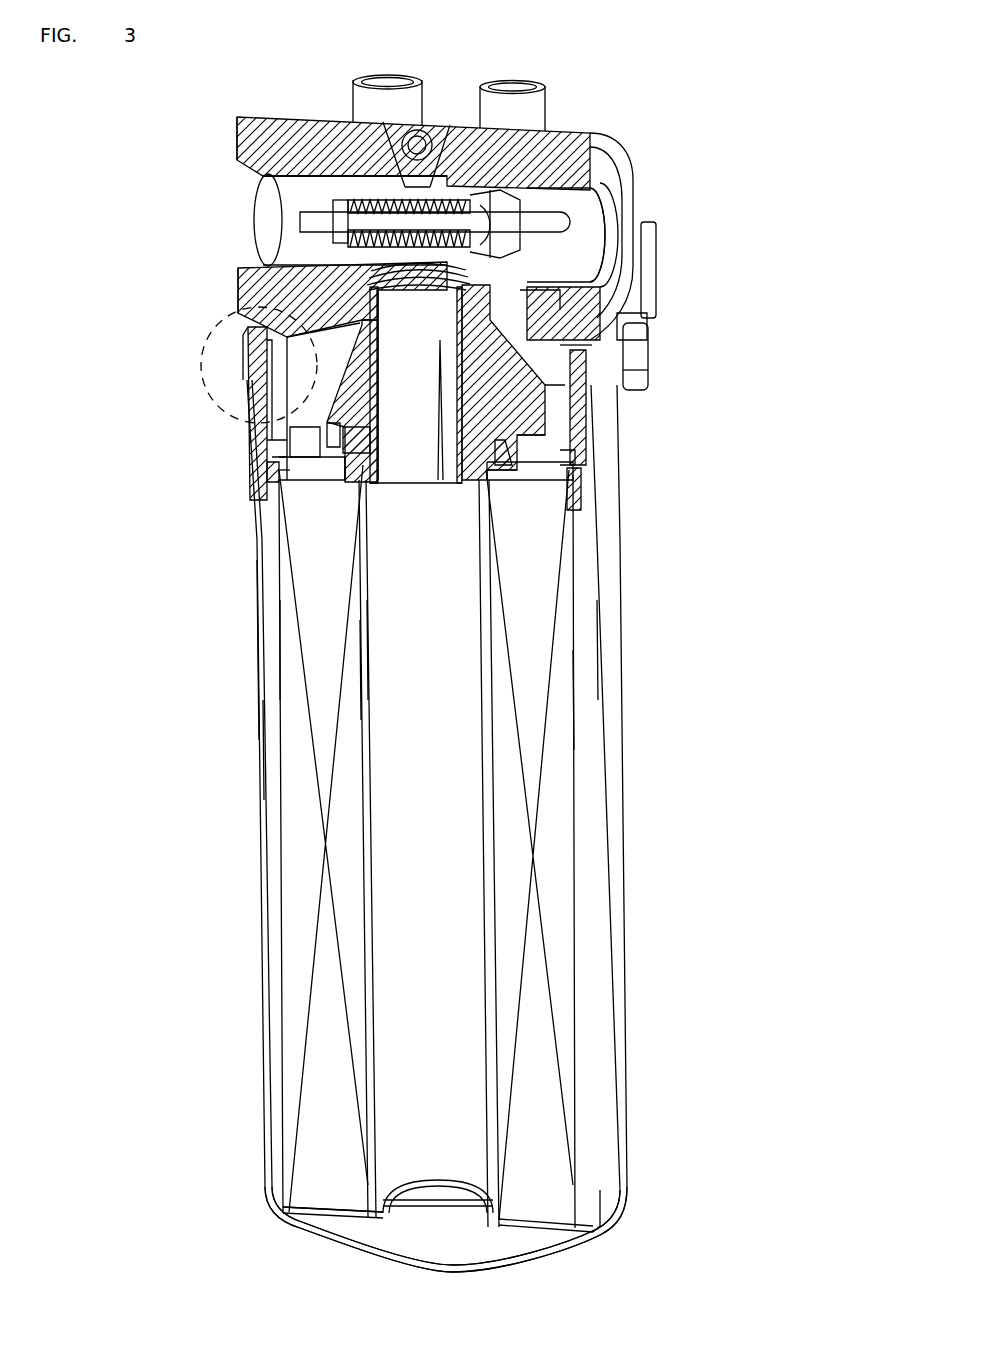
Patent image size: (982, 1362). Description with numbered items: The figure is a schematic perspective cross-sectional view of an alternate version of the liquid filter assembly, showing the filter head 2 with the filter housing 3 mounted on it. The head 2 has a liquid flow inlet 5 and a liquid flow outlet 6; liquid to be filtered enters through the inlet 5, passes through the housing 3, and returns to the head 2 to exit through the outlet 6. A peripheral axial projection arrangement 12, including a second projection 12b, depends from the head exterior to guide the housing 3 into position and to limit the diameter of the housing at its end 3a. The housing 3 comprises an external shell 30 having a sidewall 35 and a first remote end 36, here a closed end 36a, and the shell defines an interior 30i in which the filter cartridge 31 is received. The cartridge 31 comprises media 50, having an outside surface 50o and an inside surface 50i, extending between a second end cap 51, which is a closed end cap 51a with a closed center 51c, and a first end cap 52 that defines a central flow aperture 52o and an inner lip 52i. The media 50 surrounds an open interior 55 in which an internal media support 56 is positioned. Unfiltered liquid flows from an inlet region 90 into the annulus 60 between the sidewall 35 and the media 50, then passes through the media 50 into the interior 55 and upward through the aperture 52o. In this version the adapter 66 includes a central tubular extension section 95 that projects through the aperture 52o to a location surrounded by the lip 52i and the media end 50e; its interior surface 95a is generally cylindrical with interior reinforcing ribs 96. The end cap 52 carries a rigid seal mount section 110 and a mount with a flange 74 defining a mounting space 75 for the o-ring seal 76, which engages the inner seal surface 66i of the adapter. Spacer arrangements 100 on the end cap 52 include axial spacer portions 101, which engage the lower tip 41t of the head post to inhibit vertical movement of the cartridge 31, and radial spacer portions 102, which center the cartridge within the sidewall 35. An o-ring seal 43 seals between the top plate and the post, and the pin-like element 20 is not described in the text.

The filter head 2 is at (566, 150).
The filter housing 3 is at (609, 563).
The housing end 3a is at (610, 651).
The liquid flow inlet 5 is at (603, 204).
The liquid flow outlet 6 is at (258, 171).
The peripheral axial projection arrangement 12 is at (645, 346).
The second projection 12b is at (640, 362).
The pivot pin 20 is at (431, 183).
The external shell 30 is at (620, 751).
The shell interior 30i is at (272, 743).
The filter cartridge 31 is at (553, 698).
The sidewall 35 is at (258, 607).
The first remote end 36 is at (492, 1263).
The closed end 36a is at (380, 1262).
The lower tip 41t is at (270, 423).
The o-ring seal 43 is at (258, 401).
The media 50 is at (545, 879).
The media end 50e is at (285, 468).
The inside surface 50i is at (362, 679).
The outside surface 50o is at (279, 646).
The second end cap 51 is at (553, 1233).
The closed end cap 51a is at (318, 1216).
The closed center 51c is at (430, 1188).
The first end cap 52 is at (572, 472).
The inner lip 52i is at (432, 486).
The central flow aperture 52o is at (377, 480).
The open interior 55 is at (372, 758).
The internal media support 56 is at (404, 637).
The annulus 60 is at (270, 695).
The adapter 66 is at (475, 378).
The inner seal surface 66i is at (510, 473).
The flange 74 is at (513, 463).
The mounting space 75 is at (518, 438).
The seal 76 is at (342, 430).
The inlet region 90 is at (640, 319).
The central tubular extension section 95 is at (405, 485).
The interior surface 95a is at (408, 358).
The interior reinforcing ribs 96 is at (437, 425).
The spacer arrangements 100 is at (582, 484).
The axial spacer portions 101 is at (557, 454).
The radial spacer portions 102 is at (575, 500).
The seal mount section 110 is at (340, 452).